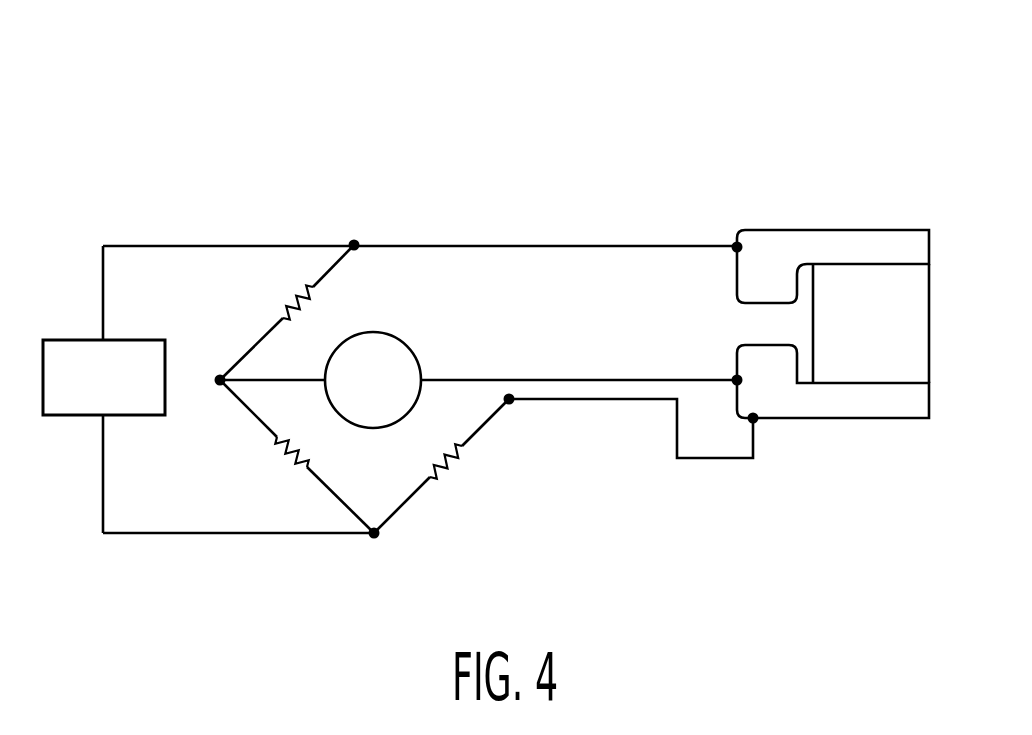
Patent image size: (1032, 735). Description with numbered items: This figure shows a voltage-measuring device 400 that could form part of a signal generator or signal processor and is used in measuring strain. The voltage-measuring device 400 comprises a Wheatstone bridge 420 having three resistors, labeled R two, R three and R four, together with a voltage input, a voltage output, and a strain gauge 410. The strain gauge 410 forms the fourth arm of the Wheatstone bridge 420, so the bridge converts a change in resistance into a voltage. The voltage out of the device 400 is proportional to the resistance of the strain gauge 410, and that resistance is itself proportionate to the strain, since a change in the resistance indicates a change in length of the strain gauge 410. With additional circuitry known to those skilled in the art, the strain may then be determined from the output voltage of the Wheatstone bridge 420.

The voltage-measuring device 400 is at (574, 56).
The strain gauge 410 is at (903, 242).
The Wheatstone bridge 420 is at (356, 198).